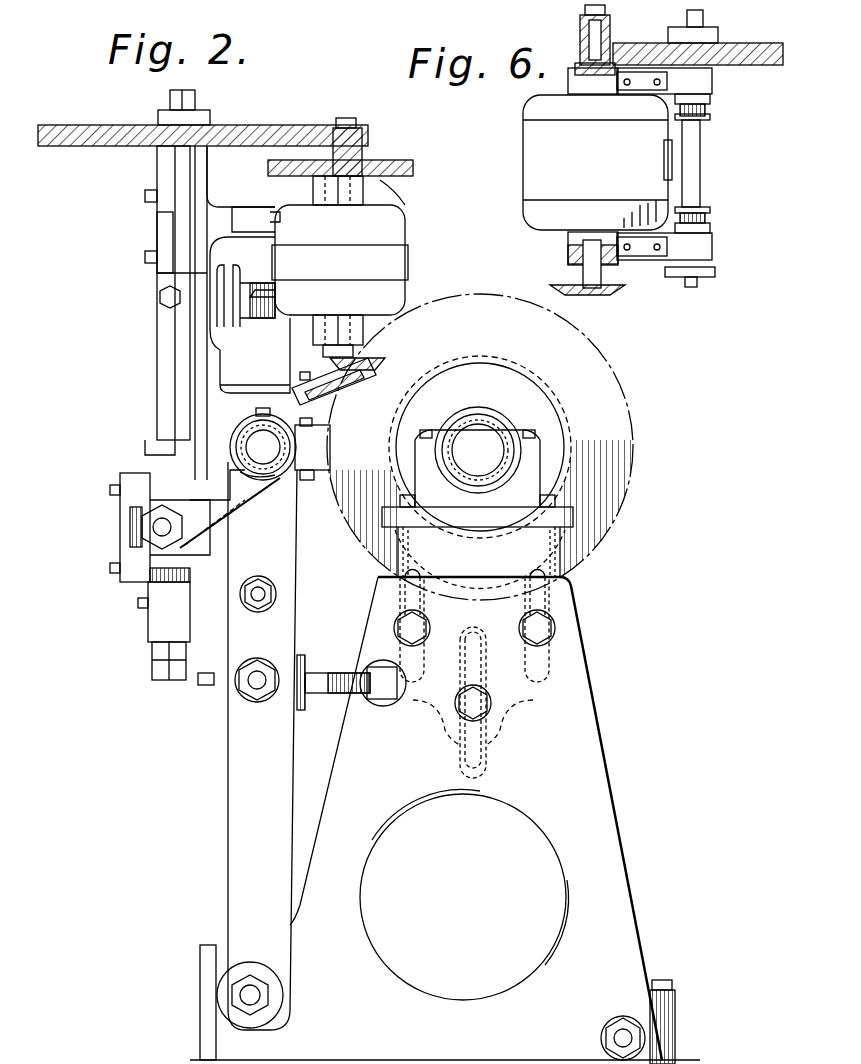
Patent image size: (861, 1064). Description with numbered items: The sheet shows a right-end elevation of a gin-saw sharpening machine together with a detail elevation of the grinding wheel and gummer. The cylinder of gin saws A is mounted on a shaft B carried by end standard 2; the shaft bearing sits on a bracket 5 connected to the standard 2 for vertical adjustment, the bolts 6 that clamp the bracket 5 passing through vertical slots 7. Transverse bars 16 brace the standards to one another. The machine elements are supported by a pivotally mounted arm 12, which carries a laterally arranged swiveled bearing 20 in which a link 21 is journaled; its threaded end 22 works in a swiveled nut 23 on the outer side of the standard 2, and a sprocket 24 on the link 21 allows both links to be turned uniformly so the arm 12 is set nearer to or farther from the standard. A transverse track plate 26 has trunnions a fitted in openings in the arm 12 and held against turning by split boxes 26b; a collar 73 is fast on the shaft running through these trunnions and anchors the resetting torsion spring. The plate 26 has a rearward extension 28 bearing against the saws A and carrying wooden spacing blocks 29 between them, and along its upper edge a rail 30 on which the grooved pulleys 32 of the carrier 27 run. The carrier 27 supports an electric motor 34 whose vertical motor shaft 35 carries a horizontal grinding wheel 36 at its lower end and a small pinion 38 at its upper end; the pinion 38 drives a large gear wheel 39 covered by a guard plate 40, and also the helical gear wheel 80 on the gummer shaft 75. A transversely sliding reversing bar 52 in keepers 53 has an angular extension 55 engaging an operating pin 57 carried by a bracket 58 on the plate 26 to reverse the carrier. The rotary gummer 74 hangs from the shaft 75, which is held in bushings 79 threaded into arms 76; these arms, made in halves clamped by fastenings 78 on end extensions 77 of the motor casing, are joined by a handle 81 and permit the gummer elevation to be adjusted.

In FIG. 2, the end standard 2 is at (612, 813).
In FIG. 2, the bracket 5 is at (477, 505).
In FIG. 2, the bolts 6 is at (440, 620).
In FIG. 2, the vertical slots 7 is at (412, 575).
In FIG. 2, the arm 12 is at (220, 840).
In FIG. 2, the transverse bars 16 is at (614, 1038).
In FIG. 2, the swiveled bearing 20 is at (255, 702).
In FIG. 2, the link 21 is at (312, 700).
In FIG. 2, the threaded end 22 is at (340, 694).
In FIG. 2, the swiveled nut 23 is at (388, 700).
In FIG. 2, the sprocket 24 is at (303, 660).
In FIG. 2, the track plate 26 is at (255, 379).
In FIG. 2, the split boxes 26b is at (320, 455).
In FIG. 2, the carrier 27 is at (157, 393).
In FIG. 2, the rearward extension 28 is at (305, 378).
In FIG. 2, the spacing blocks 29 is at (370, 372).
In FIG. 2, the rail 30 is at (222, 330).
In FIG. 2, the grooved pulleys 32 is at (240, 280).
In FIG. 2, the electric motor 34 is at (405, 240).
In FIG. 6, the electric motor 34 is at (658, 145).
In FIG. 6, the motor shaft 35 is at (568, 258).
In FIG. 2, the grinding wheel 36 is at (360, 360).
In FIG. 6, the grinding wheel 36 is at (605, 296).
In FIG. 2, the pinion 38 is at (362, 140).
In FIG. 6, the pinion 38 is at (612, 30).
In FIG. 2, the gear wheel 39 is at (241, 176).
In FIG. 2, the guard plate 40 is at (268, 126).
In FIG. 2, the reversing bar 52 is at (132, 548).
In FIG. 2, the keepers 53 is at (120, 512).
In FIG. 2, the angular extension 55 is at (140, 568).
In FIG. 2, the operating pin 57 is at (152, 527).
In FIG. 2, the brackets 58 is at (205, 528).
In FIG. 2, the collar 73 is at (285, 465).
In FIG. 6, the rotary gummer 74 is at (715, 276).
In FIG. 6, the gummer shaft 75 is at (670, 172).
In FIG. 6, the arms 76 is at (712, 92).
In FIG. 6, the end extensions 77 is at (568, 84).
In FIG. 2, the bolt or screw fastenings 78 is at (363, 185).
In FIG. 6, the bolt or screw fastenings 78 is at (627, 86).
In FIG. 2, the bushings 79 is at (263, 444).
In FIG. 6, the bushings 79 is at (710, 117).
In FIG. 2, the helical gear wheel 80 is at (413, 165).
In FIG. 6, the helical gear wheel 80 is at (755, 65).
In FIG. 2, the handle 81 is at (400, 200).
In FIG. 2, the trunnions a is at (305, 495).
In FIG. 2, the gin saws A is at (632, 430).
In FIG. 2, the shaft B is at (478, 450).